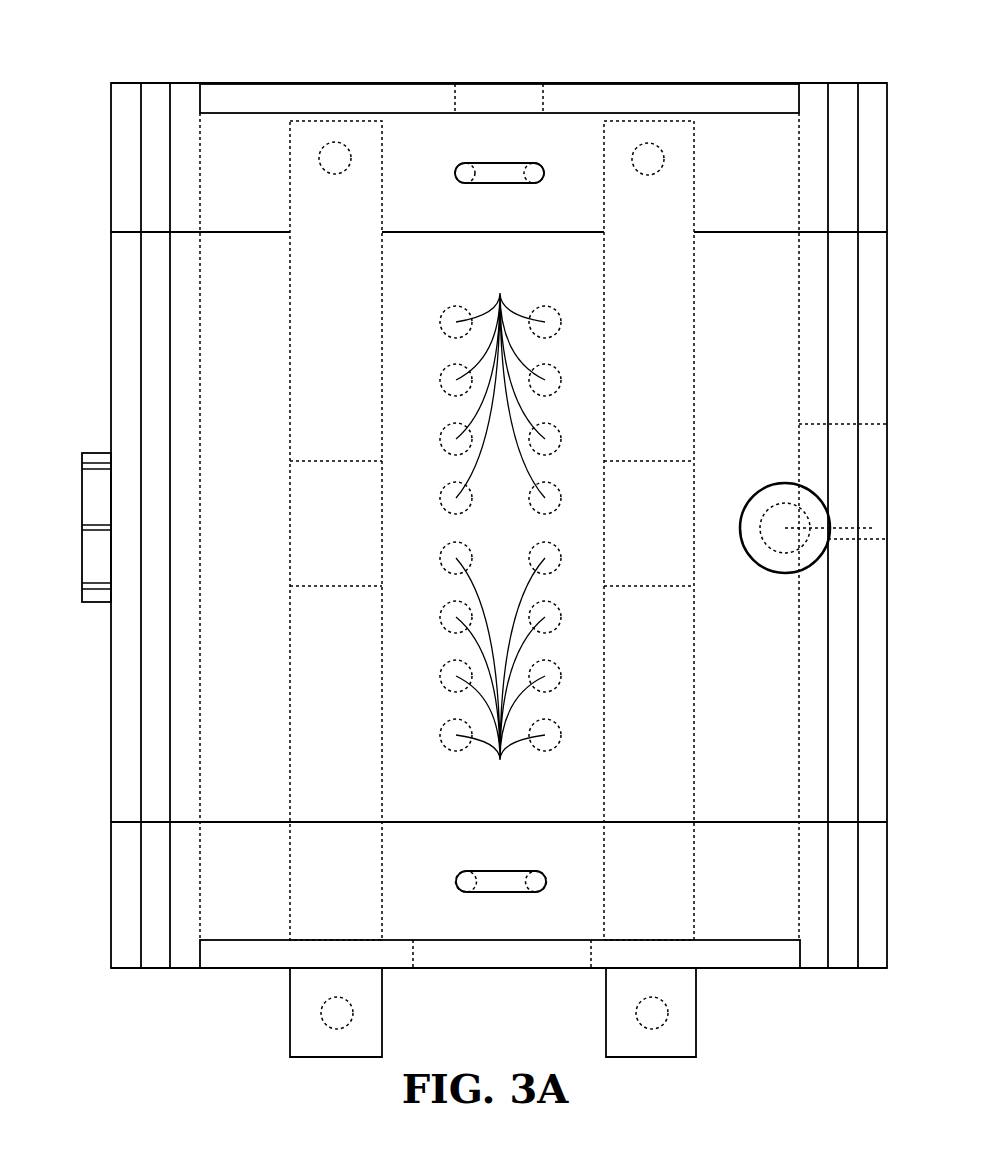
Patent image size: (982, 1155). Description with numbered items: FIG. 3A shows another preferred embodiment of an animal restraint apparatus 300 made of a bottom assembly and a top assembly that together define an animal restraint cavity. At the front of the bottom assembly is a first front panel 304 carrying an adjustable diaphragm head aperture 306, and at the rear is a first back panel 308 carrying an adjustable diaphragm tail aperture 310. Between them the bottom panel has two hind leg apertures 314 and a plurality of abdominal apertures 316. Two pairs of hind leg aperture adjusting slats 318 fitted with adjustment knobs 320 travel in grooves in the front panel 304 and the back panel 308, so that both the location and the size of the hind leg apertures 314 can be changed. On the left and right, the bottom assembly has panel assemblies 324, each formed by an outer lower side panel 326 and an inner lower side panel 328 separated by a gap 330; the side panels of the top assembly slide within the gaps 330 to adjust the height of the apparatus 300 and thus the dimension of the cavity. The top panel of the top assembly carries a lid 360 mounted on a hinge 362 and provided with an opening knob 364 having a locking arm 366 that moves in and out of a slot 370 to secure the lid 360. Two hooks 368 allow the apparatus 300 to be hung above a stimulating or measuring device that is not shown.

The animal restraint apparatus 300 is at (410, 66).
The first front panel 304 is at (710, 955).
The head aperture 306 is at (502, 976).
The first back panel 308 is at (723, 109).
The tail aperture 310 is at (500, 78).
The hind leg apertures 314 is at (323, 537).
The abdominal apertures 316 is at (500, 528).
The hind leg aperture adjusting slats 318 is at (321, 301).
The adjustment knobs 320 is at (645, 162).
The panel assemblies 324 is at (208, 572).
The outer lower side panel 326 is at (873, 144).
The inner lower side panel 328 is at (185, 394).
The gap 330 is at (843, 171).
The lid 360 is at (559, 271).
The hinge 362 is at (97, 617).
The opening knob 364 is at (750, 560).
The locking arm 366 is at (846, 527).
The hooks 368 is at (493, 163).
The slot 370 is at (795, 436).